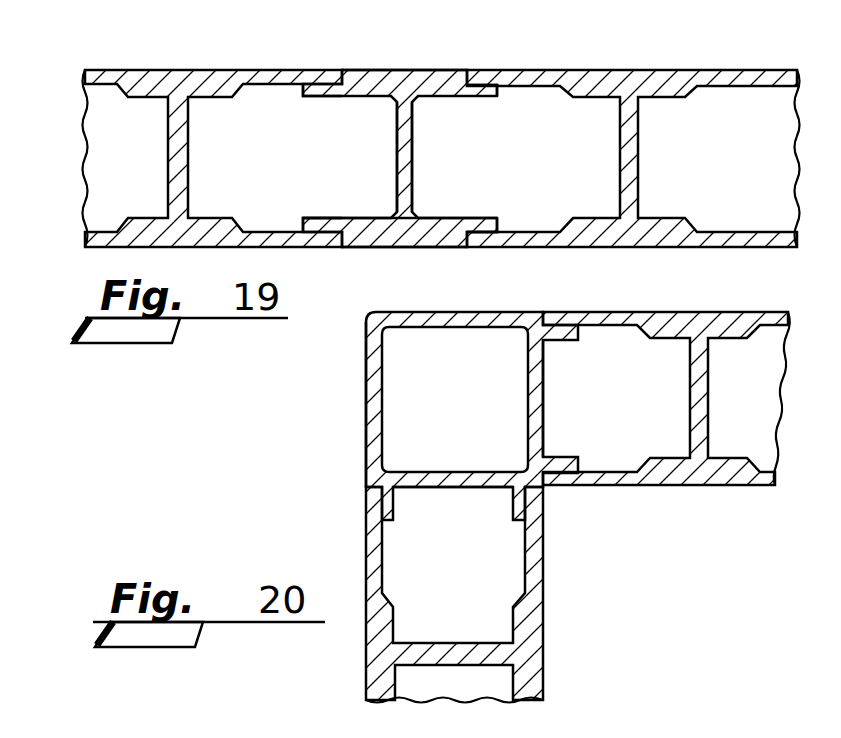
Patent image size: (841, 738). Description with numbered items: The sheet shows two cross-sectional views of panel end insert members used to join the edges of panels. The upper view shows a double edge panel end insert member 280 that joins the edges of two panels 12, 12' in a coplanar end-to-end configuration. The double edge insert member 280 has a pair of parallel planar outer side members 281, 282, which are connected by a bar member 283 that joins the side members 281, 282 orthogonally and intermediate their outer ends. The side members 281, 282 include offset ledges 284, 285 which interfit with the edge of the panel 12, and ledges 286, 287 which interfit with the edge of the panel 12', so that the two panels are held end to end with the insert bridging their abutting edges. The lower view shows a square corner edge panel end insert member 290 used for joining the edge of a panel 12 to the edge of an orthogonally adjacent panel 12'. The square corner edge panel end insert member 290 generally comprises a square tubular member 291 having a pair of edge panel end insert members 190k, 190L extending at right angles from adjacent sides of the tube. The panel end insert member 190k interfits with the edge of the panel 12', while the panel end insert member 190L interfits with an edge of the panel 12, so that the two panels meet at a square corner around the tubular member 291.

In FIG. 19, the panel 12 is at (213, 128).
In FIG. 20, the panel 12 is at (666, 431).
In FIG. 19, the panel 12' is at (633, 128).
In FIG. 20, the panel 12' is at (419, 595).
In FIG. 19, the double edge insert member 280 is at (381, 59).
In FIG. 19, the outer side member 281 is at (440, 88).
In FIG. 19, the outer side member 282 is at (415, 238).
In FIG. 19, the bar member 283 is at (412, 149).
In FIG. 19, the offset ledge 284 is at (337, 99).
In FIG. 19, the offset ledge 285 is at (315, 216).
In FIG. 19, the ledge 286 is at (492, 98).
In FIG. 19, the ledge 287 is at (484, 218).
In FIG. 20, the square corner edge panel end insert member 290 is at (355, 393).
In FIG. 20, the square tubular member 291 is at (355, 438).
In FIG. 20, the edge panel end insert member 190L is at (556, 396).
In FIG. 20, the edge panel end insert member 190k is at (461, 500).